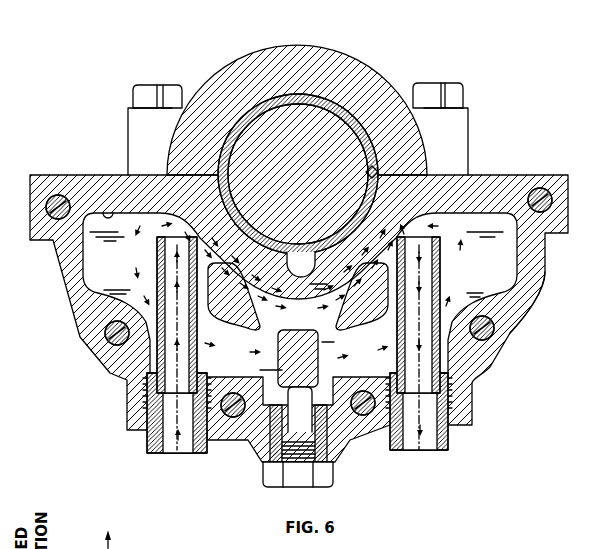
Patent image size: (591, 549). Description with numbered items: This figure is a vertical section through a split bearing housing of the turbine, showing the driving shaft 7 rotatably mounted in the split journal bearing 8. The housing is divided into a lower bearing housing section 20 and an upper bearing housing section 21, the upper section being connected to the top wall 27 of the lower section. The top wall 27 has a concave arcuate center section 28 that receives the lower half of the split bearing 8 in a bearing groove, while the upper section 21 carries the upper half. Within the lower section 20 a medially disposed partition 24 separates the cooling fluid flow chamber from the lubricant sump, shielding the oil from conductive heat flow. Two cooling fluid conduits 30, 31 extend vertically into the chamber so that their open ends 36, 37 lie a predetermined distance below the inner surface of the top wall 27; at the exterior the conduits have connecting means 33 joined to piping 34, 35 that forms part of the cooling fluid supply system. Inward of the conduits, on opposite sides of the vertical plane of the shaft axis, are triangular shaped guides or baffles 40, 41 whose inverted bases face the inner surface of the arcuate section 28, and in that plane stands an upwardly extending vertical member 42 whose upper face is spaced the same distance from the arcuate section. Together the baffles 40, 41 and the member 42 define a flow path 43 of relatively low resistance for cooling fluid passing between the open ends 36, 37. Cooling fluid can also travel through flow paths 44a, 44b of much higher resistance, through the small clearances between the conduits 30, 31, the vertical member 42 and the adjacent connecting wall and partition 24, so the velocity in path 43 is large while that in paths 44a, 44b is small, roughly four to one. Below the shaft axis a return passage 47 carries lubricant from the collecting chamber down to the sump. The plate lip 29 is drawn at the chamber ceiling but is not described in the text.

The driving shaft 7 is at (303, 182).
The journal bearing 8 is at (240, 122).
The lower bearing housing section 20 is at (512, 323).
The upper bearing housing section 21 is at (378, 78).
The medially disposed partition 24 is at (507, 255).
The top wall 27 is at (310, 177).
The concave arcuate center section 28 is at (118, 174).
The plate lip 29 is at (107, 213).
The cooling fluid conduit 30 is at (158, 352).
The cooling fluid conduit 31 is at (441, 348).
The connecting means 33 is at (145, 405).
The piping 34 is at (147, 443).
The piping 35 is at (450, 442).
The open end 36 is at (172, 213).
The open end 37 is at (388, 247).
The triangular shaped guide or baffle 40 is at (230, 313).
The triangular shaped guide or baffle 41 is at (372, 307).
The upwardly extending vertical member 42 is at (283, 360).
The flow path 43 is at (312, 328).
The flow path 44a is at (90, 272).
The flow path 44b is at (492, 275).
The return passage 47 is at (303, 262).